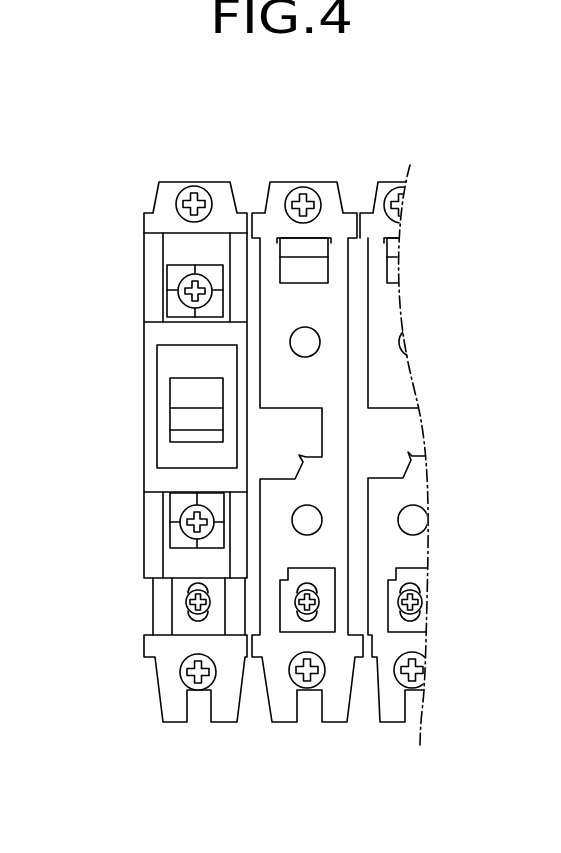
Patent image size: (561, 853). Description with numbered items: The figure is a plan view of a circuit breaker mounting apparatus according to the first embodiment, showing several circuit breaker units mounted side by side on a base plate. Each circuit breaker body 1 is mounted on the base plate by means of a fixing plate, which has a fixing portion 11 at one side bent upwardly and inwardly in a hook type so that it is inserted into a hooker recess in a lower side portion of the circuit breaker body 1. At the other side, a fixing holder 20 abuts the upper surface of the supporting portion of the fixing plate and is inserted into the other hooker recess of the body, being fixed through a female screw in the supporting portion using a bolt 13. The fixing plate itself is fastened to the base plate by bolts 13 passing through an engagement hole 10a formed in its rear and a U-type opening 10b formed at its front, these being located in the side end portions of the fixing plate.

The circuit breaker body 1 is at (122, 378).
The engagement hole 10a is at (199, 185).
The U-type opening 10b is at (190, 718).
The fixing portion 11 is at (307, 272).
The bolt 13 is at (183, 214).
The fixing holder 20 is at (322, 625).